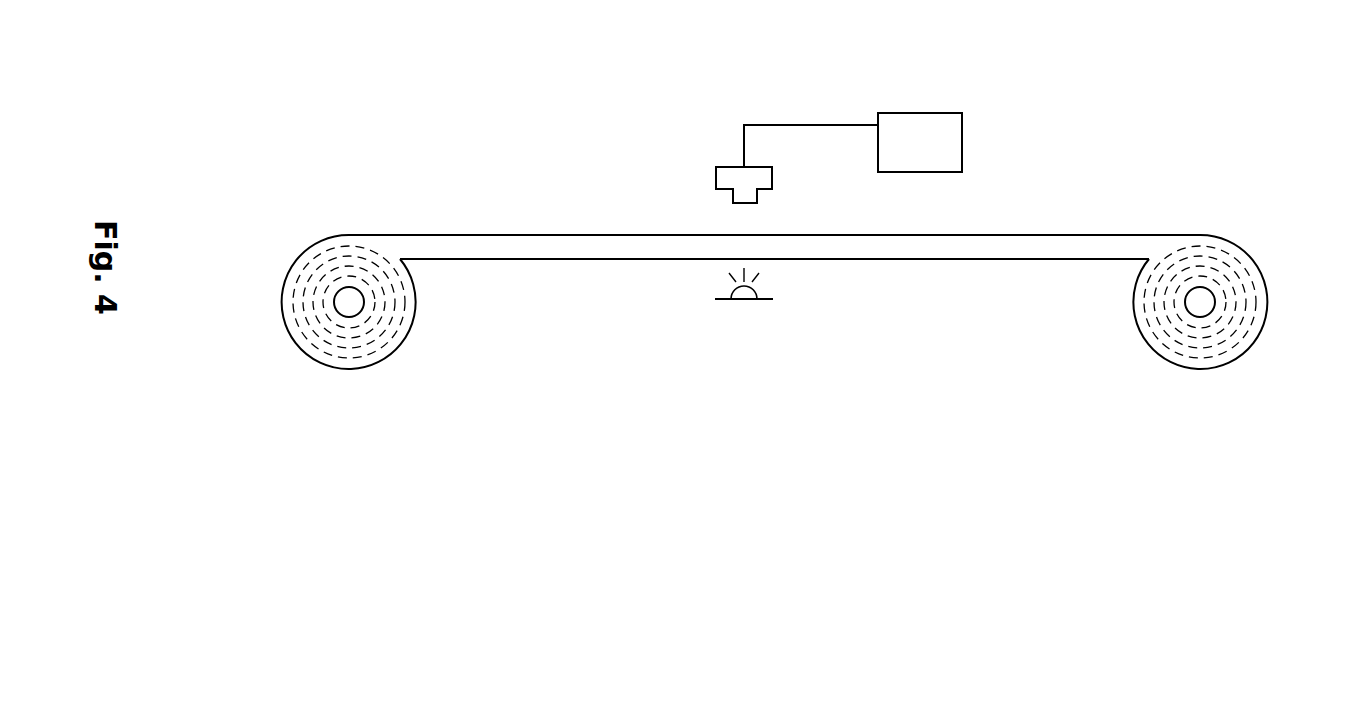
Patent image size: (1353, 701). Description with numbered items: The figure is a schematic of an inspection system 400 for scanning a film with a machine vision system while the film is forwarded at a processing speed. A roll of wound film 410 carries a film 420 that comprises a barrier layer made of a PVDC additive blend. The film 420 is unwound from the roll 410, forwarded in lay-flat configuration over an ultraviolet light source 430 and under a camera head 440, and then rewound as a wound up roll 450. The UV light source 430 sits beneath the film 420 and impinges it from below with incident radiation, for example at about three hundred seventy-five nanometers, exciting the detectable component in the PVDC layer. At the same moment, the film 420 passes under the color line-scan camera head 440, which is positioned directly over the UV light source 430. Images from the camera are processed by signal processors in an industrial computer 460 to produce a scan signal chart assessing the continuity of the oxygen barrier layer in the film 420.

The inspection system 400 is at (298, 180).
The roll of wound film 410 is at (283, 300).
The film 420 is at (502, 235).
The ultraviolet light source 430 is at (723, 301).
The camera head 440 is at (772, 176).
The wound up roll 450 is at (1250, 338).
The industrial computer 460 is at (951, 140).